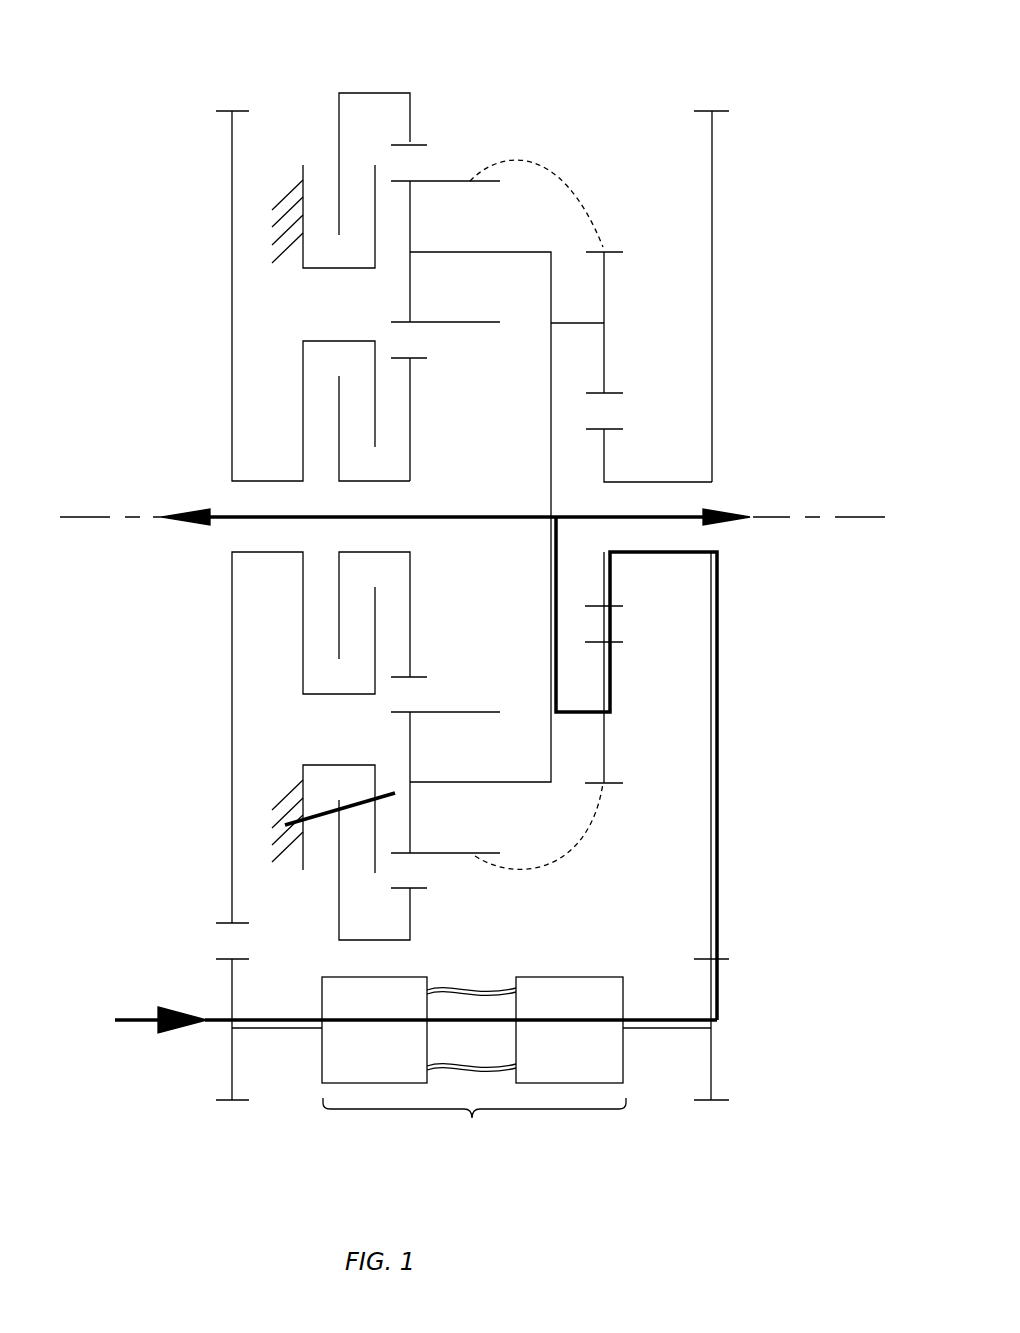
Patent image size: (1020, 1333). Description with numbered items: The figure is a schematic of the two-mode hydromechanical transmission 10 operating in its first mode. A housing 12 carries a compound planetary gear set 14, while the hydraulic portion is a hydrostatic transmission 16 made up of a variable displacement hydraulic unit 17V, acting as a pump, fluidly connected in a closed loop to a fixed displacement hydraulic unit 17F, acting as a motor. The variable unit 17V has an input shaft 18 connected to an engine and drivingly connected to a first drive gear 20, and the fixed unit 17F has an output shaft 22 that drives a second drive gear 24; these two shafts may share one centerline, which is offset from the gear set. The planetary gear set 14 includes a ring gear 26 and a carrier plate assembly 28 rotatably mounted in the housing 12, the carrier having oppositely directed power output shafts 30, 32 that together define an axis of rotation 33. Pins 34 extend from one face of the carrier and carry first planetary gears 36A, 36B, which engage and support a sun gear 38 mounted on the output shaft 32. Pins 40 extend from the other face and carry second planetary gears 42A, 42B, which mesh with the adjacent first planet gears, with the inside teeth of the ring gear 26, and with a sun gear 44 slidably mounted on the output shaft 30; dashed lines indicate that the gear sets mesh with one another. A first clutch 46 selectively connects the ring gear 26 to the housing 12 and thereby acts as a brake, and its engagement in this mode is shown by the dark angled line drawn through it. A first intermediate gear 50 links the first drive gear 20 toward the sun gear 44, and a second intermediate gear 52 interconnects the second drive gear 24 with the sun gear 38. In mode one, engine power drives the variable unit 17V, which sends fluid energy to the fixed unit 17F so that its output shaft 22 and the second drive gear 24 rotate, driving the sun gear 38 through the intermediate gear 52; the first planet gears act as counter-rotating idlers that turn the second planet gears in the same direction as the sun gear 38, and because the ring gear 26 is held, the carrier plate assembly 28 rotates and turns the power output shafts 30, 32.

The hydromechanical transmission 10 is at (172, 245).
The housing 12 is at (282, 800).
The compound planetary gear set 14 is at (592, 152).
The hydrostatic transmission 16 is at (474, 1069).
The variable displacement hydraulic unit 17V is at (374, 1030).
The fixed displacement hydraulic unit 17F is at (525, 1030).
The input shaft 18 is at (293, 1030).
The first drive gear 20 is at (233, 1067).
The output shaft 22 is at (688, 1032).
The second drive gear 24 is at (711, 1065).
The ring gear 26 is at (339, 93).
The carrier plate assembly 28 is at (532, 428).
The power output shaft 30 is at (512, 518).
The power output shaft 32 is at (660, 516).
The axis of rotation 33 is at (105, 517).
The pins 34 is at (578, 322).
The planetary gear 36A is at (615, 249).
The planetary gear 36B is at (608, 785).
The sun gear 38 is at (603, 456).
The pins 40 is at (487, 252).
The planetary gear 42A is at (447, 180).
The planetary gear 42B is at (440, 855).
The sun gear 44 is at (420, 358).
The first clutch 46 is at (327, 822).
The first intermediate gear 50 is at (232, 341).
The second intermediate gear 52 is at (712, 325).